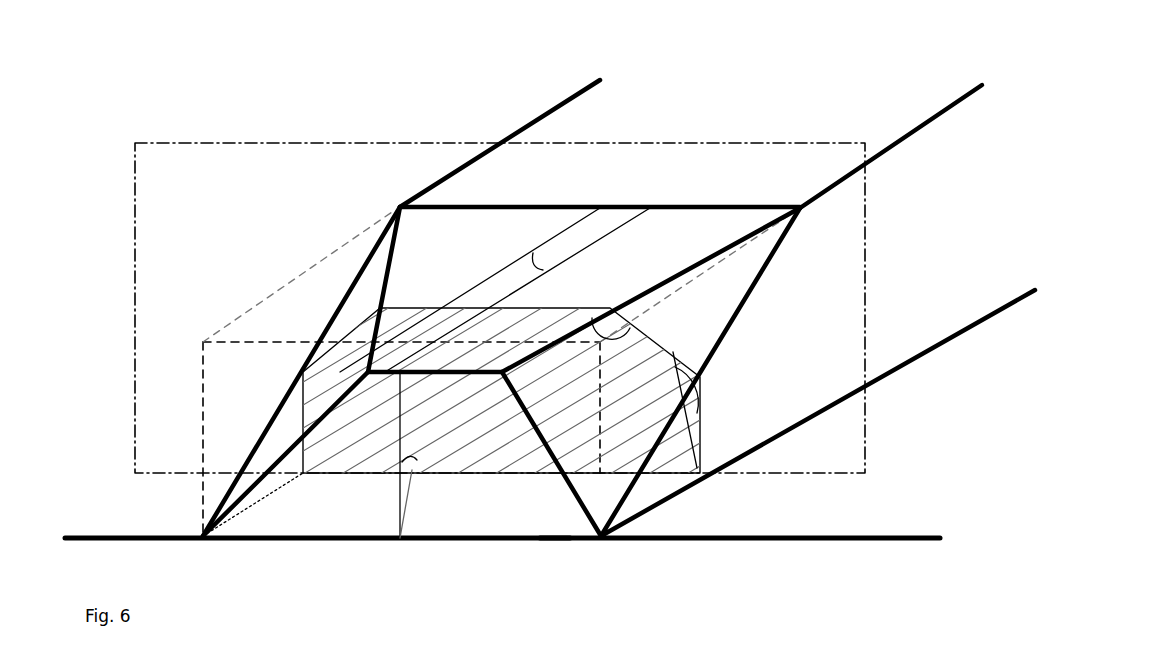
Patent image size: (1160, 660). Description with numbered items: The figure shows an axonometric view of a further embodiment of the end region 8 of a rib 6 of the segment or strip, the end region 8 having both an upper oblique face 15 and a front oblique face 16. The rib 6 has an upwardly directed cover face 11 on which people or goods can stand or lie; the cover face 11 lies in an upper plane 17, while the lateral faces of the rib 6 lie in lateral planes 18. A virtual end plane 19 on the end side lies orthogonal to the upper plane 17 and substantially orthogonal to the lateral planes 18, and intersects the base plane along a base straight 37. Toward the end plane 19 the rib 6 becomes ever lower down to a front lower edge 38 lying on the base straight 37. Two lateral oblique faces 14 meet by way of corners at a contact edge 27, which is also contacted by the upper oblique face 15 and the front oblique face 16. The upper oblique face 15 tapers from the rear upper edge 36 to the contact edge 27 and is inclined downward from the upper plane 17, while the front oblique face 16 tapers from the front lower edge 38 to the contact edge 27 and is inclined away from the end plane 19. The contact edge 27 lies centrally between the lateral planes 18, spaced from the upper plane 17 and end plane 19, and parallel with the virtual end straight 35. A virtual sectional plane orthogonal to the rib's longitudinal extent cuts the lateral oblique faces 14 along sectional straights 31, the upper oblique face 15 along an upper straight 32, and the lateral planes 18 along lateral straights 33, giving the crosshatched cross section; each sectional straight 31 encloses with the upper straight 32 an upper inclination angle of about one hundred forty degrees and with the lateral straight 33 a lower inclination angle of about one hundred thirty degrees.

The rib 6 is at (857, 113).
The end region 8 is at (138, 116).
The cover face 11 is at (633, 157).
The lateral oblique faces 14 is at (665, 299).
The upper oblique face 15 is at (472, 233).
The front oblique face 16 is at (477, 520).
The upper plane 17 is at (310, 318).
The lateral planes 18 is at (773, 350).
The end plane 19 is at (232, 442).
The contact edge 27 is at (382, 375).
The sectional straight 31 is at (673, 352).
The upper straight 32 is at (395, 232).
The lateral straight 33 is at (692, 462).
The end straight 35 is at (262, 340).
The rear upper edge 36 is at (663, 207).
The base straight 37 is at (555, 545).
The front lower edge 38 is at (515, 543).